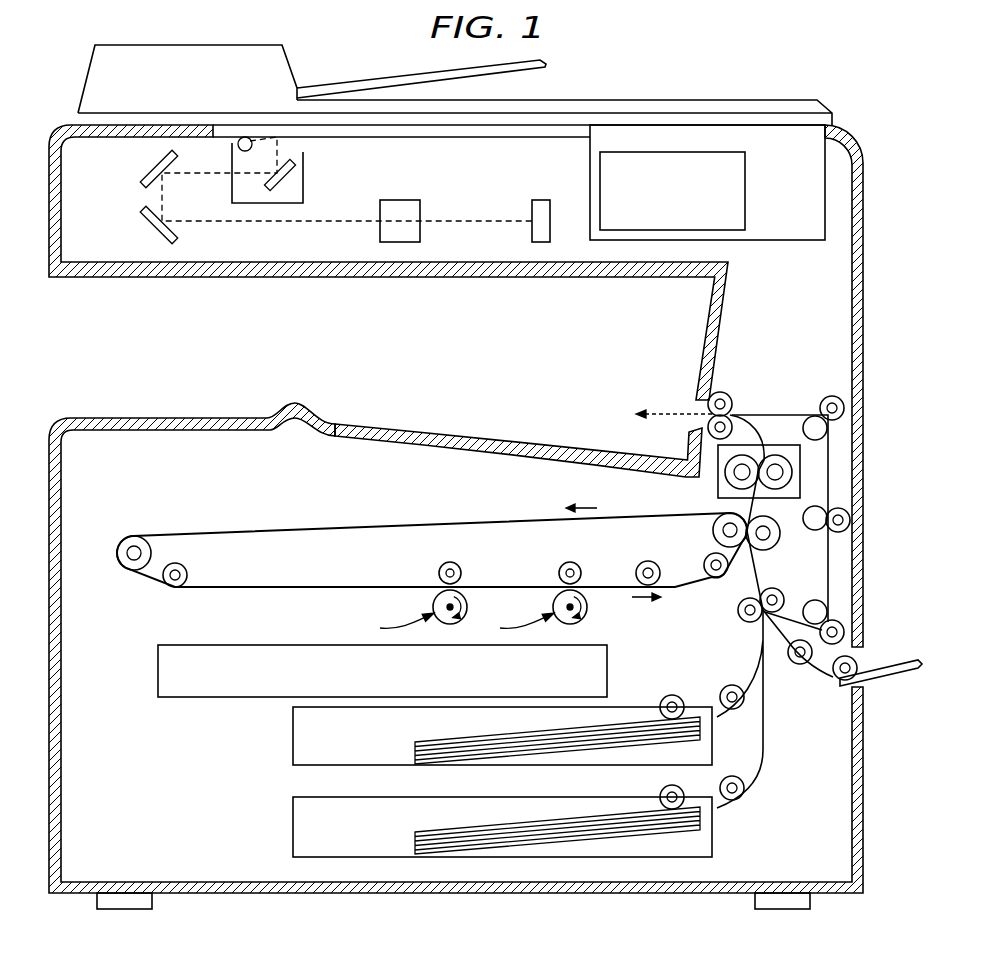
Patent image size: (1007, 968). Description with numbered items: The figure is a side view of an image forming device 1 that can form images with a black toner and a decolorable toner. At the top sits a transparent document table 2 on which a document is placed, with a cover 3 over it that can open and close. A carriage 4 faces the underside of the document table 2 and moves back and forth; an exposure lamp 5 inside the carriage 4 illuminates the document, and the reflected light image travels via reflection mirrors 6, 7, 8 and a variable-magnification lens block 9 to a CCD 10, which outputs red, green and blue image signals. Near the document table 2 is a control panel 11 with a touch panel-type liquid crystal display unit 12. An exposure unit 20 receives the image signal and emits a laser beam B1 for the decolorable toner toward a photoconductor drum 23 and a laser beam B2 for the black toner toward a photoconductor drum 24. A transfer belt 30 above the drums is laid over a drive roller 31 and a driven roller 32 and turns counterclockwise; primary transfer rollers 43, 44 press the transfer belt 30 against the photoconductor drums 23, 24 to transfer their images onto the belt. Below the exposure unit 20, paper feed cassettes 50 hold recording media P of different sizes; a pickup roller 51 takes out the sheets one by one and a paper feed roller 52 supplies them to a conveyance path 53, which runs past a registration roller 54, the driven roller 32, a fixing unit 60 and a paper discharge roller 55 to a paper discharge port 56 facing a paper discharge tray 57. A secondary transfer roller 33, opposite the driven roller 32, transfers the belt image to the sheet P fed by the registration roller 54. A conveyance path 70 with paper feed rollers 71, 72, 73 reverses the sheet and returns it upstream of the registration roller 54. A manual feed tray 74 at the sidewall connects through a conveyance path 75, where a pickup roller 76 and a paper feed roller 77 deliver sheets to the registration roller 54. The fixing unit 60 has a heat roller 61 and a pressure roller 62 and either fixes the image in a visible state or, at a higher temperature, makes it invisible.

The image forming device 1 is at (862, 168).
The document table 2 is at (462, 138).
The cover 3 is at (647, 100).
The carriage 4 is at (304, 153).
The exposure lamp 5 is at (238, 145).
The reflection mirror 6 is at (292, 182).
The reflection mirror 7 is at (148, 168).
The reflection mirror 8 is at (150, 232).
The variable-magnification lens block 9 is at (402, 200).
The CCD 10 is at (540, 200).
The control panel 11 is at (798, 241).
The liquid crystal display unit 12 is at (729, 231).
The exposure unit 20 is at (158, 672).
The photoconductor drum 23 is at (470, 600).
The photoconductor drum 24 is at (590, 606).
The transfer belt 30 is at (447, 522).
The drive roller 31 is at (118, 550).
The driven roller 32 is at (712, 528).
The secondary transfer roller 33 is at (770, 545).
The primary transfer roller 43 is at (438, 572).
The primary transfer roller 44 is at (558, 572).
The paper feed cassette 50 is at (293, 735).
The pickup roller 51 is at (665, 700).
The paper feed roller 52 is at (730, 686).
The conveyance path 53 is at (767, 650).
The registration roller 54 is at (740, 608).
The paper discharge roller 55 is at (728, 396).
The paper discharge port 56 is at (694, 407).
The paper discharge tray 57 is at (478, 430).
The fixing unit 60 is at (802, 470).
The heat roller 61 is at (724, 472).
The pressure roller 62 is at (795, 488).
The conveyance path 70 is at (782, 414).
The paper feed roller 71 is at (832, 395).
The paper feed roller 72 is at (848, 532).
The paper feed roller 73 is at (840, 624).
The manual feed tray 74 is at (890, 683).
The conveyance path 75 is at (800, 665).
The pickup roller 76 is at (858, 663).
The paper feed roller 77 is at (818, 665).
The laser beam B1 is at (390, 628).
The laser beam B2 is at (510, 628).
The recording medium P is at (445, 740).